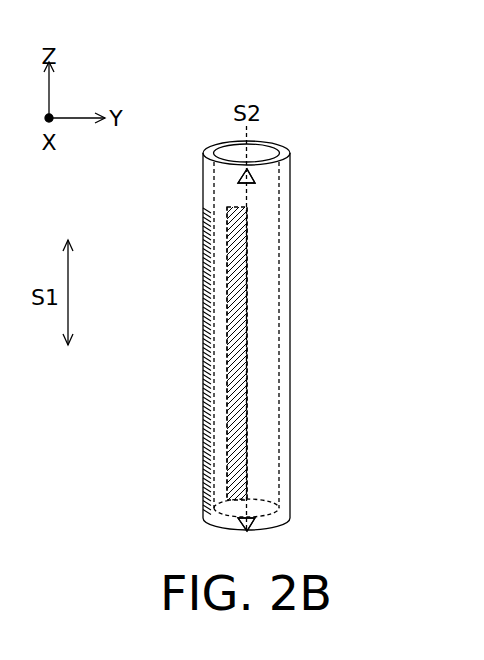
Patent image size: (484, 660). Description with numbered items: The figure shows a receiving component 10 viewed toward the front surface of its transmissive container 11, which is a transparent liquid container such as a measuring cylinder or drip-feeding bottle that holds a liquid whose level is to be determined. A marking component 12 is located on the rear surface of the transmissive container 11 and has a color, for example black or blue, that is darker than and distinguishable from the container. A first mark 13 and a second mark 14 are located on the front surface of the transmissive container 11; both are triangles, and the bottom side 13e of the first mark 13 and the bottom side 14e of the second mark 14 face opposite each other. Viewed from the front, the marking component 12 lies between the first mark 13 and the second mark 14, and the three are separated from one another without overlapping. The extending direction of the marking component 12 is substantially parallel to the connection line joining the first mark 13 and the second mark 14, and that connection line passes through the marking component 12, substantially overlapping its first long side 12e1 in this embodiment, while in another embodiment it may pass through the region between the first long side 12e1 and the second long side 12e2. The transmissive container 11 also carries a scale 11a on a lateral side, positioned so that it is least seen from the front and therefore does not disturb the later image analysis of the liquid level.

The receiving component 10 is at (220, 124).
The transmissive container 11 is at (203, 180).
The scale 11a is at (203, 249).
The marking component 12 is at (247, 330).
The first long side 12e1 is at (247, 404).
The second long side 12e2 is at (227, 403).
The first mark 13 is at (252, 176).
The bottom side 13e is at (249, 184).
The second mark 14 is at (256, 524).
The bottom side 14e is at (250, 518).